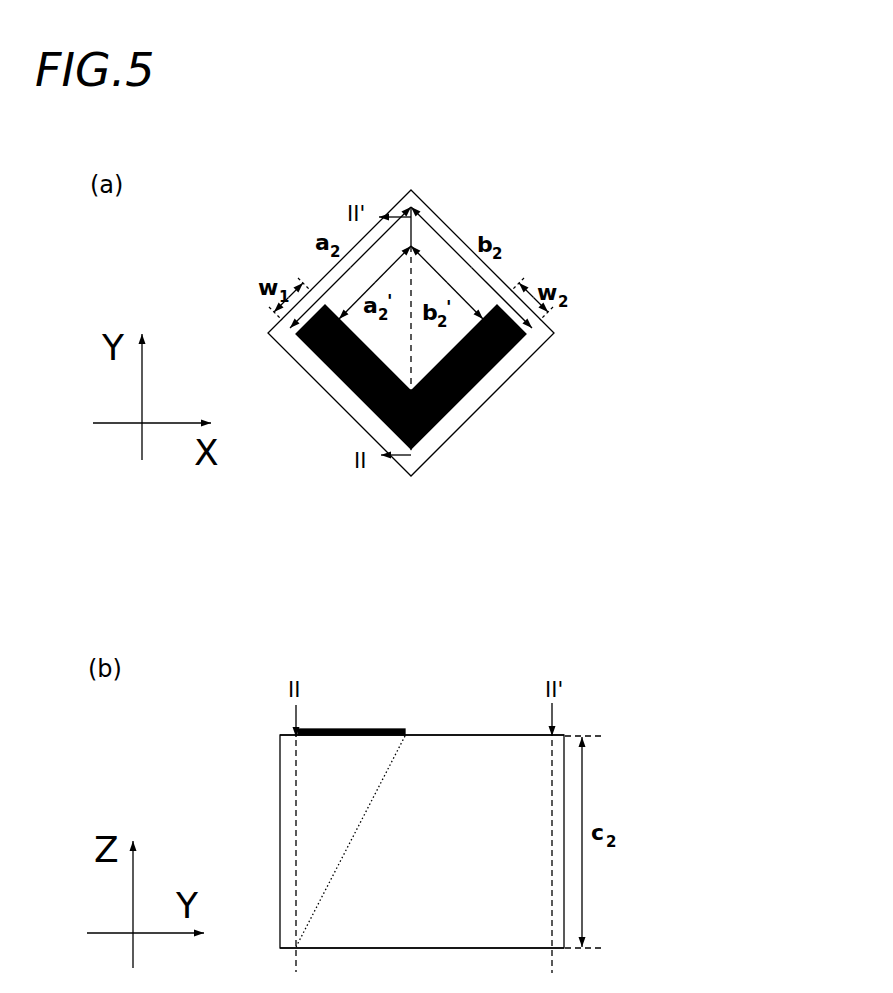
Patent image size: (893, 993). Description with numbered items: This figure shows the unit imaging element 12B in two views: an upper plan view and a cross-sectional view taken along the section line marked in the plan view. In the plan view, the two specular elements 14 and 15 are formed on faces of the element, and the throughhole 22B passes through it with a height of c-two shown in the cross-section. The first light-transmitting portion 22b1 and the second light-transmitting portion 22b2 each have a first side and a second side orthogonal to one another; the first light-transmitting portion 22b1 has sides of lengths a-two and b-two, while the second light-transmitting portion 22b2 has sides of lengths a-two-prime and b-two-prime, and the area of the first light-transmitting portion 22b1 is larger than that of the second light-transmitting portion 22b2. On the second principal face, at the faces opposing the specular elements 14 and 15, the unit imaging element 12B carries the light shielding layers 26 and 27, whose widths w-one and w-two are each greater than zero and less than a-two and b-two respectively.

The unit imaging element 12B is at (630, 204).
The throughhole 22B is at (433, 258).
The specular element 14 is at (348, 278).
The specular element 15 is at (466, 282).
The light shielding layer 26 is at (352, 391).
The light shielding layer 27 is at (458, 404).
The second light-transmitting portion 22b2 is at (548, 746).
The first light-transmitting portion 22b1 is at (533, 950).